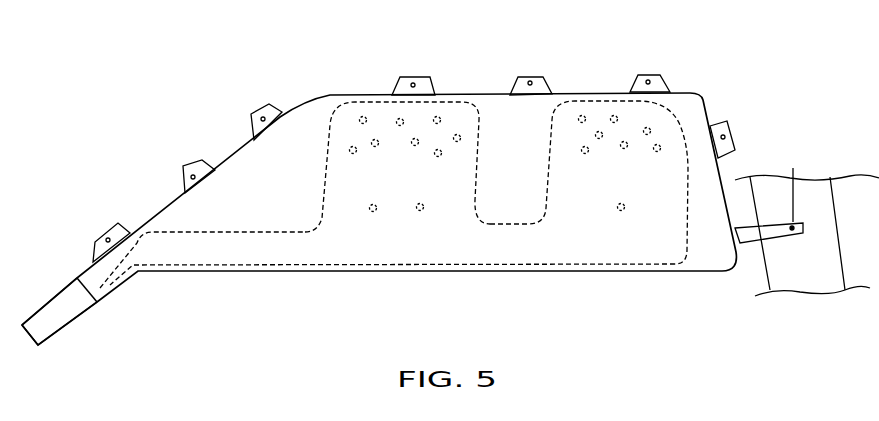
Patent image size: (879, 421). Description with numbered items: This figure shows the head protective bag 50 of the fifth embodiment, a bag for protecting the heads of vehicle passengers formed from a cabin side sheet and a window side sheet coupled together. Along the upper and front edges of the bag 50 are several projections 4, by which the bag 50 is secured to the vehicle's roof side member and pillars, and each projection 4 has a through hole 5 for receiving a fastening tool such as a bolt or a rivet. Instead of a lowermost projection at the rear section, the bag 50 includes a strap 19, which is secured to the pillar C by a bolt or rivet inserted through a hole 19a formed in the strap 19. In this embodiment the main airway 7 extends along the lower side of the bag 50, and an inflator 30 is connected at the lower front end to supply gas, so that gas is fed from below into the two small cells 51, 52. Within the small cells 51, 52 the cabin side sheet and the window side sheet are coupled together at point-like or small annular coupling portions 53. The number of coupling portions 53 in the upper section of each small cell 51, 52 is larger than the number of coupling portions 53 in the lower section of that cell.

The projection 4 is at (118, 223).
The through hole 5 is at (108, 240).
The main airway 7 is at (238, 258).
The strap 19 is at (775, 240).
The hole 19a is at (793, 183).
The inflator 30 is at (48, 330).
The bag 50 is at (575, 75).
The small cell 51 is at (340, 248).
The small cell 52 is at (585, 248).
The coupling portion 53 is at (360, 115).
The pillar C is at (828, 283).